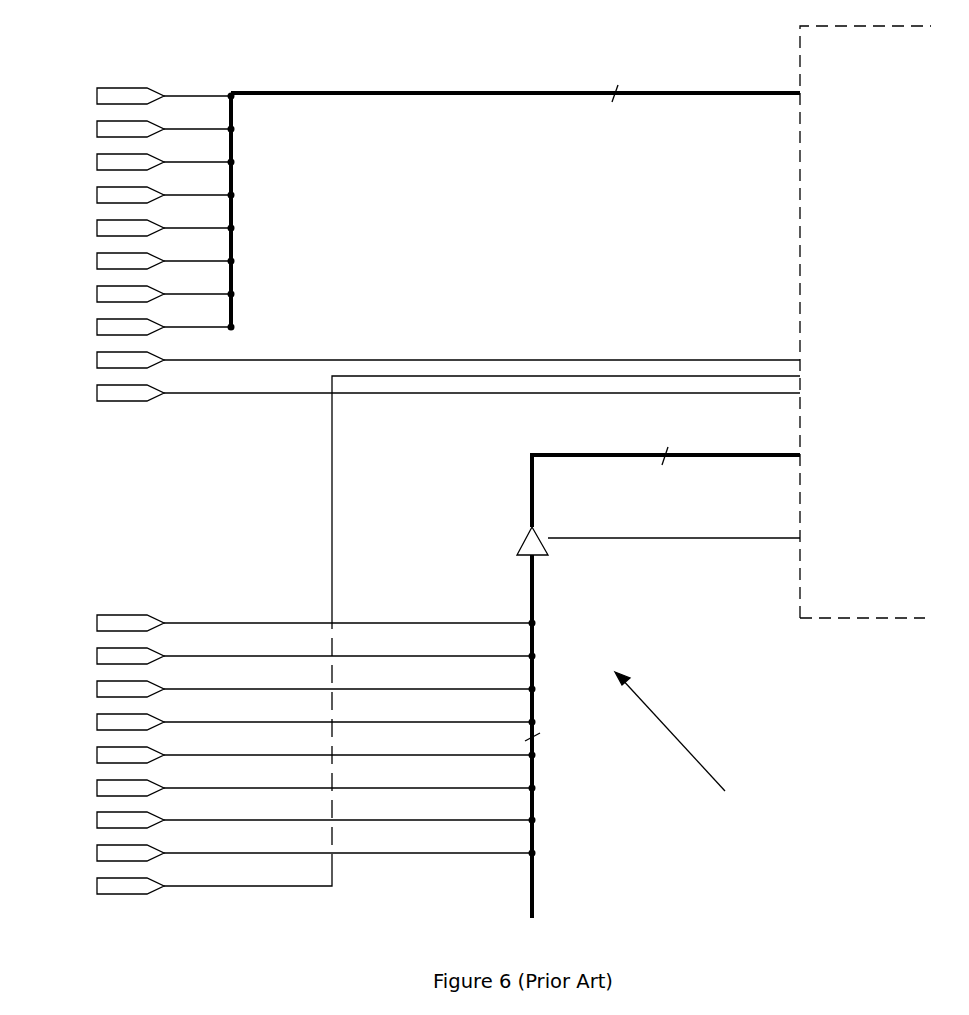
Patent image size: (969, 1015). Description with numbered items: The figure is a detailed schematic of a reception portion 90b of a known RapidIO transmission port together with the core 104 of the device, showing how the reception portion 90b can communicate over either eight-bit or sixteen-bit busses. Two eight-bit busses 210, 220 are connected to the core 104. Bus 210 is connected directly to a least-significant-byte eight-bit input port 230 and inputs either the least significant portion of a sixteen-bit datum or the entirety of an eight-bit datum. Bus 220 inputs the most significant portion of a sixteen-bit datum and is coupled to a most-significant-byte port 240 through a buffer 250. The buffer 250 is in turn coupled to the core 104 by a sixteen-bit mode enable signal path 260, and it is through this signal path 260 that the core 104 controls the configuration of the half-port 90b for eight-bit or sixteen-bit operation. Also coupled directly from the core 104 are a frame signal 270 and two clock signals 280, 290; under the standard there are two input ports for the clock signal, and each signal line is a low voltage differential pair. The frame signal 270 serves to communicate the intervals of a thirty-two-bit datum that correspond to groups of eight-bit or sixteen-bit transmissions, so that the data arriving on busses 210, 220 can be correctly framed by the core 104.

The core 104 is at (865, 322).
The bus 210 is at (580, 93).
The bus 220 is at (623, 455).
The LSB/8 bit input port 230 is at (82, 97).
The MSB port 240 is at (82, 624).
The buffer 250 is at (524, 535).
The 16 bit mode enable signal path 260 is at (715, 538).
The frame signal 270 is at (429, 394).
The clock signal 280 is at (429, 361).
The clock signal 290 is at (429, 637).
The reception portion 90b is at (682, 751).